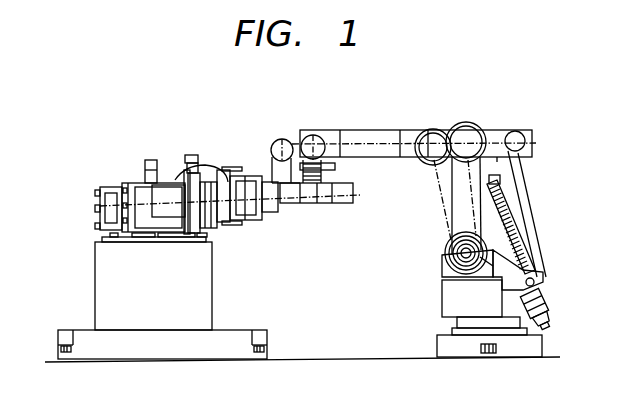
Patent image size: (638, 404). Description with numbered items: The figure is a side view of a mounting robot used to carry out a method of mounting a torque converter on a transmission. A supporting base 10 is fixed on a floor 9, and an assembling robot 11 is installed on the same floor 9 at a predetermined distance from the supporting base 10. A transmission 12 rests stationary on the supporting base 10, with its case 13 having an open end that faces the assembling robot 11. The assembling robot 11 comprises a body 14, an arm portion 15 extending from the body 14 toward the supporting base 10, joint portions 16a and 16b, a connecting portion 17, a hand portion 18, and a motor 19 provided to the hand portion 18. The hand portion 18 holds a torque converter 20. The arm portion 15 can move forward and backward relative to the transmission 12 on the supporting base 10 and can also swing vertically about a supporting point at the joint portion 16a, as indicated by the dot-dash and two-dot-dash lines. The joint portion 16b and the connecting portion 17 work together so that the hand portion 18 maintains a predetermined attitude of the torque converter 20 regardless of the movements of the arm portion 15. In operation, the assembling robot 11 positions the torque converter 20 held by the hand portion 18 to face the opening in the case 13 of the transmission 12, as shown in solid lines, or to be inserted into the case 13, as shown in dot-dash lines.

The floor 9 is at (343, 358).
The supporting base 10 is at (212, 304).
The assembling robot 11 is at (433, 255).
The transmission 12 is at (136, 167).
The case 13 is at (186, 170).
The body 14 is at (443, 302).
The arm portion 15 is at (372, 106).
The joint portion 16a is at (464, 124).
The joint portion 16b is at (303, 133).
The connecting portion 17 is at (318, 165).
The hand portion 18 is at (218, 224).
The motor 19 is at (297, 207).
The torque converter 20 is at (227, 182).